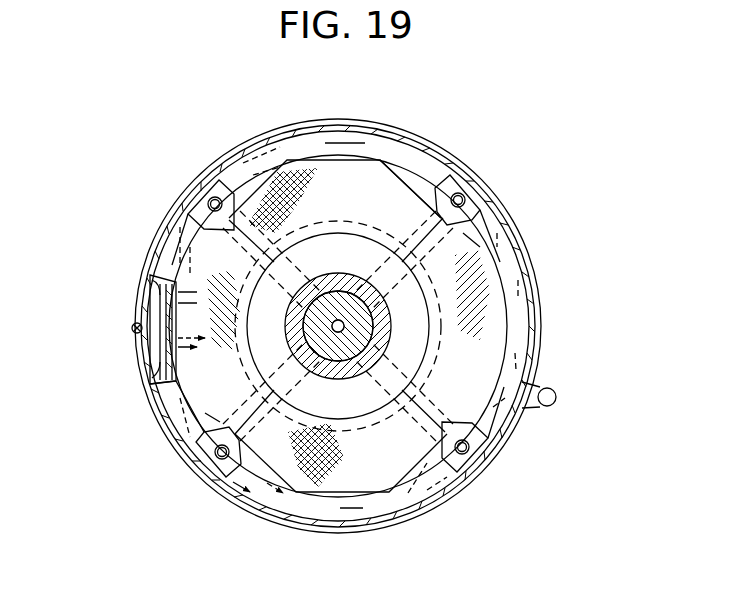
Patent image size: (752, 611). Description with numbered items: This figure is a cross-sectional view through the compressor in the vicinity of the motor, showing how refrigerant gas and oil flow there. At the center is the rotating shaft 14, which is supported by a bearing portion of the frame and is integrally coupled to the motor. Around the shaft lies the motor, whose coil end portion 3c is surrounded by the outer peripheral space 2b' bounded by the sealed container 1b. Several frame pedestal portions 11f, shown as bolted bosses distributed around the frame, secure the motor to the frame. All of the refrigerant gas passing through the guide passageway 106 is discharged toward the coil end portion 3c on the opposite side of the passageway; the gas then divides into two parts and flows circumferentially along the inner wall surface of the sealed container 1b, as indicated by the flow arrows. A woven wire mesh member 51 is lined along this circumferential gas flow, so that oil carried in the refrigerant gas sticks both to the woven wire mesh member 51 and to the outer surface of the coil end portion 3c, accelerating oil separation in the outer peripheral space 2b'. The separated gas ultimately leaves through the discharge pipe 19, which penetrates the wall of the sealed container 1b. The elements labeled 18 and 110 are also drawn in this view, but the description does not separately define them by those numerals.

The sealed container 1b is at (422, 129).
The coil end portion 3c is at (379, 470).
The woven wire mesh member 51 is at (440, 168).
The outer peripheral space 2b' is at (486, 212).
The frame pedestal portion 11f is at (222, 192).
The rotating shaft 14 is at (347, 345).
The air inlet filter 18 is at (152, 300).
The screw 110 is at (135, 332).
The guide passageway 106 is at (175, 412).
The discharge pipe 19 is at (550, 391).